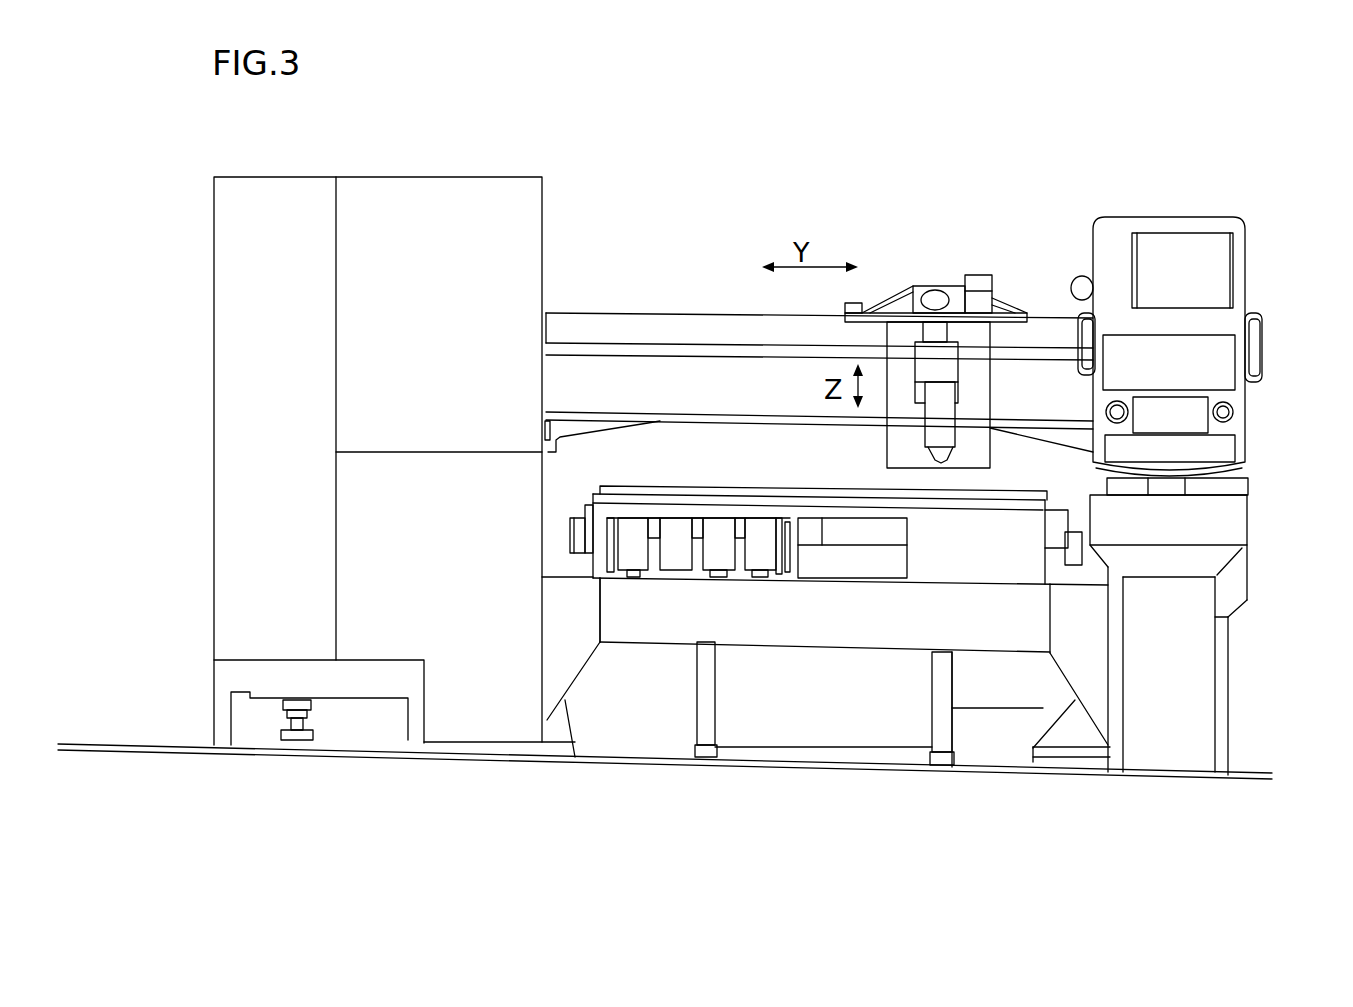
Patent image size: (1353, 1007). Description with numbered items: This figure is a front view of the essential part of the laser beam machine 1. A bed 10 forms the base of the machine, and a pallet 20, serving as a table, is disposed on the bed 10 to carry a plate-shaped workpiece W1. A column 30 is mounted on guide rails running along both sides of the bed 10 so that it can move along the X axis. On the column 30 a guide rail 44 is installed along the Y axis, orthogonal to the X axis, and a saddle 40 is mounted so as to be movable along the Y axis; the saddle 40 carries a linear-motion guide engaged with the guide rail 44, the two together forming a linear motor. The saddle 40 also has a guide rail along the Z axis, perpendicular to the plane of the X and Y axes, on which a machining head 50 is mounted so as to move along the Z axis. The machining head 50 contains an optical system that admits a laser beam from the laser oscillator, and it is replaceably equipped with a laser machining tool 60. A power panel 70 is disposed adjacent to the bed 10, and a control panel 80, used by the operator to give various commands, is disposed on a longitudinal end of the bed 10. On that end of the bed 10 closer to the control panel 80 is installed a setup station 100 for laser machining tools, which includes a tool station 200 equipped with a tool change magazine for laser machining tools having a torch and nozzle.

The laser beam machine 1 is at (892, 214).
The bed 10 is at (1222, 688).
The pallet 20 is at (1050, 540).
The column 30 is at (720, 338).
The saddle 40 is at (915, 288).
The guide rail 44 is at (628, 355).
The machining head 50 is at (940, 367).
The laser machining tool 60 is at (940, 423).
The power panel 70 is at (394, 461).
The control panel 80 is at (1228, 317).
The setup station 100 is at (972, 572).
The tool station 200 is at (656, 622).
The workpiece W1 is at (748, 490).